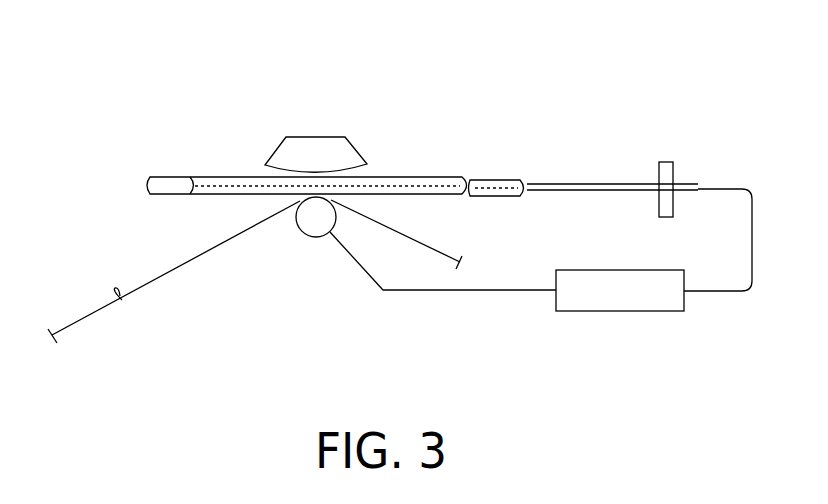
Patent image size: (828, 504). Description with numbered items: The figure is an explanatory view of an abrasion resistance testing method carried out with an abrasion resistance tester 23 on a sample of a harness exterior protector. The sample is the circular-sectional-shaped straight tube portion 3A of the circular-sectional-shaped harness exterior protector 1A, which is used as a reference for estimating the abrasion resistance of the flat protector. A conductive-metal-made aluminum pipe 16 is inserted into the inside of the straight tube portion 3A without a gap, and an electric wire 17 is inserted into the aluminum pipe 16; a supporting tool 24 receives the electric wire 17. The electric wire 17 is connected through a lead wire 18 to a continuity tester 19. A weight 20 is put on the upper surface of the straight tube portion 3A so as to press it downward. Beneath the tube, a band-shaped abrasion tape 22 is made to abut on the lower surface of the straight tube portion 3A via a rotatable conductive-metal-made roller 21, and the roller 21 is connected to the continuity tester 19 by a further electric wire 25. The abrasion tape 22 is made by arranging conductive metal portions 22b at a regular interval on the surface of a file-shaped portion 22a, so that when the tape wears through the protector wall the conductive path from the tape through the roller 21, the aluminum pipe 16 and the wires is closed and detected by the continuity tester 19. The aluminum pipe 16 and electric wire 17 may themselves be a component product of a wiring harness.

The abrasion resistance tester 23 is at (557, 53).
The weight 20 is at (314, 137).
The circular-sectional-shaped harness exterior protector 1A is at (307, 149).
The circular-sectional-shaped straight tube portion 3A is at (412, 177).
The aluminum pipe 16 is at (498, 180).
The electric wire 17 is at (620, 184).
The supporting tool 24 is at (663, 162).
The lead wire 18 is at (742, 188).
The continuity tester 19 is at (614, 311).
The electric wire 25 is at (461, 291).
The roller 21 is at (303, 235).
The abrasion tape 22 is at (218, 250).
The file-shaped portion 22a is at (122, 300).
The conductive metal portions 22b is at (175, 268).